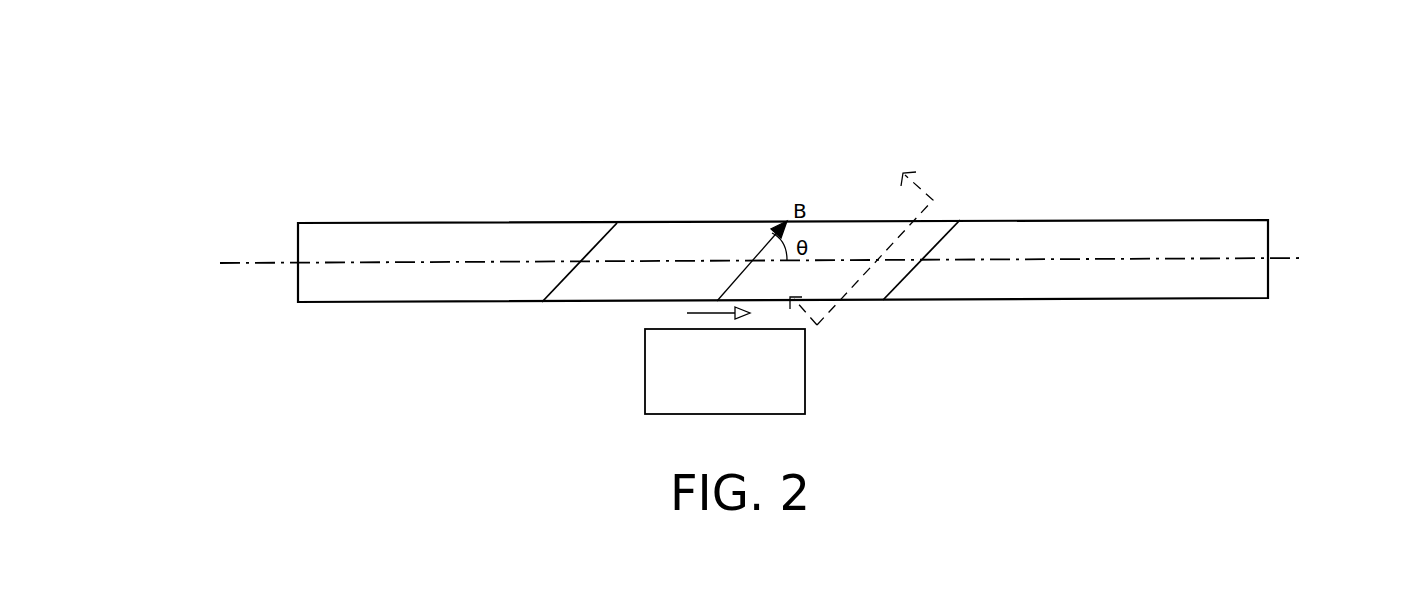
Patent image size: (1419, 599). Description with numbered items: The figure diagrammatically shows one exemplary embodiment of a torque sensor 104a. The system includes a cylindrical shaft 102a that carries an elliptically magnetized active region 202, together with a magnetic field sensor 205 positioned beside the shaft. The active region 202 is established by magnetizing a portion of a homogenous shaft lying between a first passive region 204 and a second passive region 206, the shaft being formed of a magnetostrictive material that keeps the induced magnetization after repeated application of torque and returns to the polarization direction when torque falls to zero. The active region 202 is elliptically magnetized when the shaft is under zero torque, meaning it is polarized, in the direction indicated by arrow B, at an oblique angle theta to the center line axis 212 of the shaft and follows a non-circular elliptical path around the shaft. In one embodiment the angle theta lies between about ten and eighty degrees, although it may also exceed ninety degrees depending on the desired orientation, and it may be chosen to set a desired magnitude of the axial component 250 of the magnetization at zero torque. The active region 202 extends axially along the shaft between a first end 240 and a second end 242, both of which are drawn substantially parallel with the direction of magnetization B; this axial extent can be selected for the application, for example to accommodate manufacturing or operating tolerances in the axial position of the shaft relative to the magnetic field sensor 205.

The cylindrical shaft 102a is at (360, 179).
The torque sensor 104a is at (973, 85).
The active region 202 is at (657, 221).
The first passive region 204 is at (452, 223).
The second passive region 206 is at (1143, 220).
The magnetic field sensor 205 is at (805, 370).
The center line axis 212 is at (1304, 259).
The first end of the active region 240 is at (548, 285).
The second end of the active region 242 is at (943, 237).
The axial component 250 is at (687, 313).